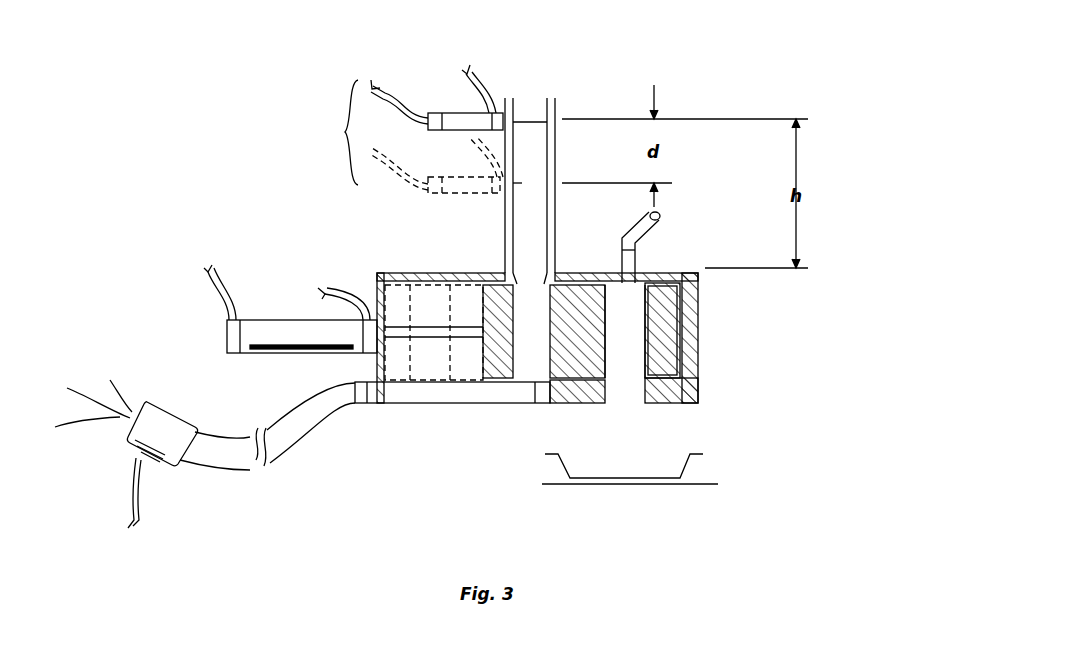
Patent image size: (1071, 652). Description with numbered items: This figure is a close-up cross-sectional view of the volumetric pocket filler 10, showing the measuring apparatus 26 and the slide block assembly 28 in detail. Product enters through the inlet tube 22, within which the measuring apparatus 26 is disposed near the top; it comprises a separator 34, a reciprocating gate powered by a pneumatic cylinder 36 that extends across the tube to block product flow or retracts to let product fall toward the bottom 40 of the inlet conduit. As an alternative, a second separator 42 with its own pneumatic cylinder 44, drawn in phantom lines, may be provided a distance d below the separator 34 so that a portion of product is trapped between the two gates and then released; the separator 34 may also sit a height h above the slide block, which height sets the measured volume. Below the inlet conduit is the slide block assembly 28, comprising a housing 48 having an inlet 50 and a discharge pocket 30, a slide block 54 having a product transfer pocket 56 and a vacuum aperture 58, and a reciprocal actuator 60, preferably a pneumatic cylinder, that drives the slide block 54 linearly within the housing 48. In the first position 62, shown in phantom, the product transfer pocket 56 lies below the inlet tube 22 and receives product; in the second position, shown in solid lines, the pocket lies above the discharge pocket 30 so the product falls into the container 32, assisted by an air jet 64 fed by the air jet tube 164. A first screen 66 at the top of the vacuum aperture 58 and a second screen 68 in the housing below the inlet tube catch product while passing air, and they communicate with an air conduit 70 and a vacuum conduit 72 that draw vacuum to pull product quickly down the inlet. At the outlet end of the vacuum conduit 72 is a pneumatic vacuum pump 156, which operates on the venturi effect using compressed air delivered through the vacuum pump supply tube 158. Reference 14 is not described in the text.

The volumetric pocket filler 10 is at (865, 237).
The fuel tank fill pipe 14 is at (630, 505).
The inlet tube 22 is at (526, 215).
The measuring apparatus 26 is at (336, 132).
The slide block assembly 28 is at (737, 328).
The discharge pocket 30 is at (628, 385).
The container 32 is at (704, 455).
The separator 34 is at (527, 120).
The pneumatic cylinder 36 is at (452, 113).
The bottom of the inlet conduit 40 is at (535, 268).
The second separator 42 is at (528, 183).
The pneumatic cylinder 44 is at (455, 178).
The housing 48 is at (380, 273).
The inlet 50 is at (527, 270).
The slide block 54 is at (665, 347).
The product transfer pocket 56 is at (625, 331).
The vacuum aperture 58 is at (544, 331).
The reciprocal actuator 60 is at (277, 328).
The first position 62 is at (400, 296).
The air jet 64 is at (632, 262).
The first screen 66 is at (550, 277).
The second screen 68 is at (533, 392).
The air conduit 70 is at (458, 392).
The vacuum conduit 72 is at (297, 433).
The pneumatic vacuum pump 156 is at (165, 423).
The vacuum pump supply tube 158 is at (143, 503).
The air jet tube 164 is at (650, 228).